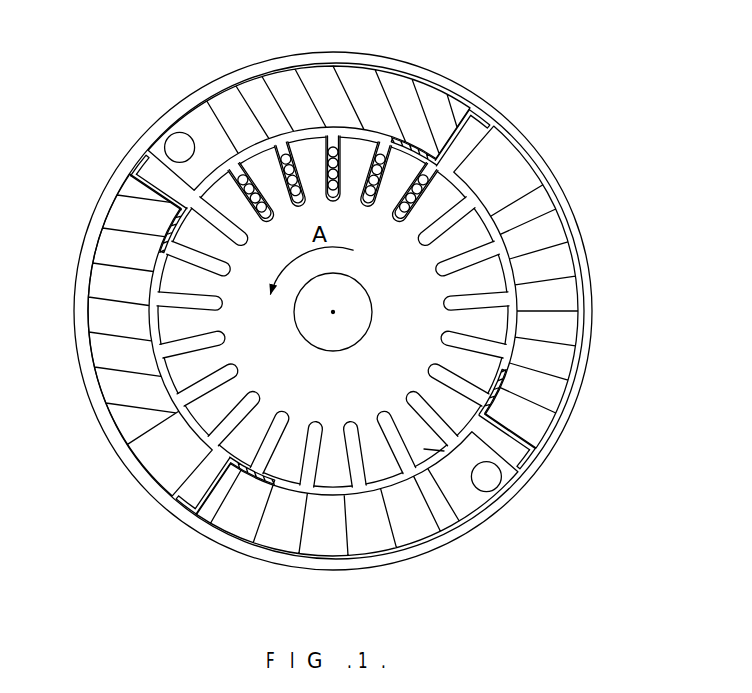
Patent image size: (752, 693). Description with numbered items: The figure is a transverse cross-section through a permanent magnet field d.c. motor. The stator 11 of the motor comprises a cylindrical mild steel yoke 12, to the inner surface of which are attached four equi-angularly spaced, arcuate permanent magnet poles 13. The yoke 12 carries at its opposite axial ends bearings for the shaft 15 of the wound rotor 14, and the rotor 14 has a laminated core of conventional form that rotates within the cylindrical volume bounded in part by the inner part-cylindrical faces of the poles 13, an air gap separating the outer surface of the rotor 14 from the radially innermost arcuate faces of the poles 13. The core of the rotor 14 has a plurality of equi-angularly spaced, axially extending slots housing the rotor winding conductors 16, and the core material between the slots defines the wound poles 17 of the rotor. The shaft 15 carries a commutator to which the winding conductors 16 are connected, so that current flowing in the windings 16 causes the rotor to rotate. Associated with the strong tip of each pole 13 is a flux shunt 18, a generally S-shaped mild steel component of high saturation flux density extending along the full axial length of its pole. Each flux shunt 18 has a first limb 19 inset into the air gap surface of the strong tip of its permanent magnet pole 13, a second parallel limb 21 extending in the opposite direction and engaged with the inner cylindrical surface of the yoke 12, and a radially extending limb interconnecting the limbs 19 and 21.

The stator 11 is at (594, 270).
The yoke 12 is at (558, 210).
The permanent magnet poles 13 is at (262, 110).
The wound rotor 14 is at (408, 273).
The shaft 15 is at (315, 327).
The rotor winding conductors 16 is at (430, 183).
The wound poles 17 is at (473, 432).
The flux shunt 18 is at (452, 126).
The first limb 19 is at (401, 130).
The second limb 21 is at (470, 121).